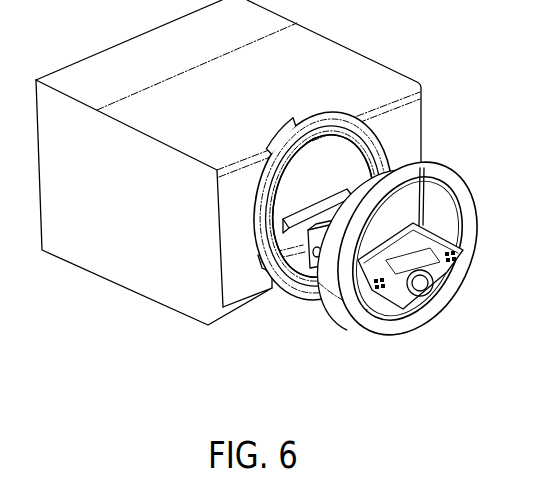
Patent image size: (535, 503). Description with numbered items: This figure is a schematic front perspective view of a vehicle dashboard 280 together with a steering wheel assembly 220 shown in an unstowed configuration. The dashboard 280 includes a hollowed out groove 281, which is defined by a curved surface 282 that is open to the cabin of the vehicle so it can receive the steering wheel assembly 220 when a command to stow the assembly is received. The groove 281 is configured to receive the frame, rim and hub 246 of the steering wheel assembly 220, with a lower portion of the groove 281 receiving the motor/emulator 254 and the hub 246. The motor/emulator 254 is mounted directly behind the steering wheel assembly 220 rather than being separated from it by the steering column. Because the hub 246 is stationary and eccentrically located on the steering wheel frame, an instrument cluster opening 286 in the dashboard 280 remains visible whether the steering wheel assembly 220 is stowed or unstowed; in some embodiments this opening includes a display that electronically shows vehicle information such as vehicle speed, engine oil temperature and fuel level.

The steering wheel assembly 220 is at (395, 268).
The steering wheel hub 246 is at (403, 311).
The motor/emulator 254 is at (298, 315).
The dashboard 280 is at (312, 161).
The hollowed out groove 281 is at (344, 116).
The curved surface 282 is at (381, 140).
The instrument cluster opening 286 is at (303, 188).